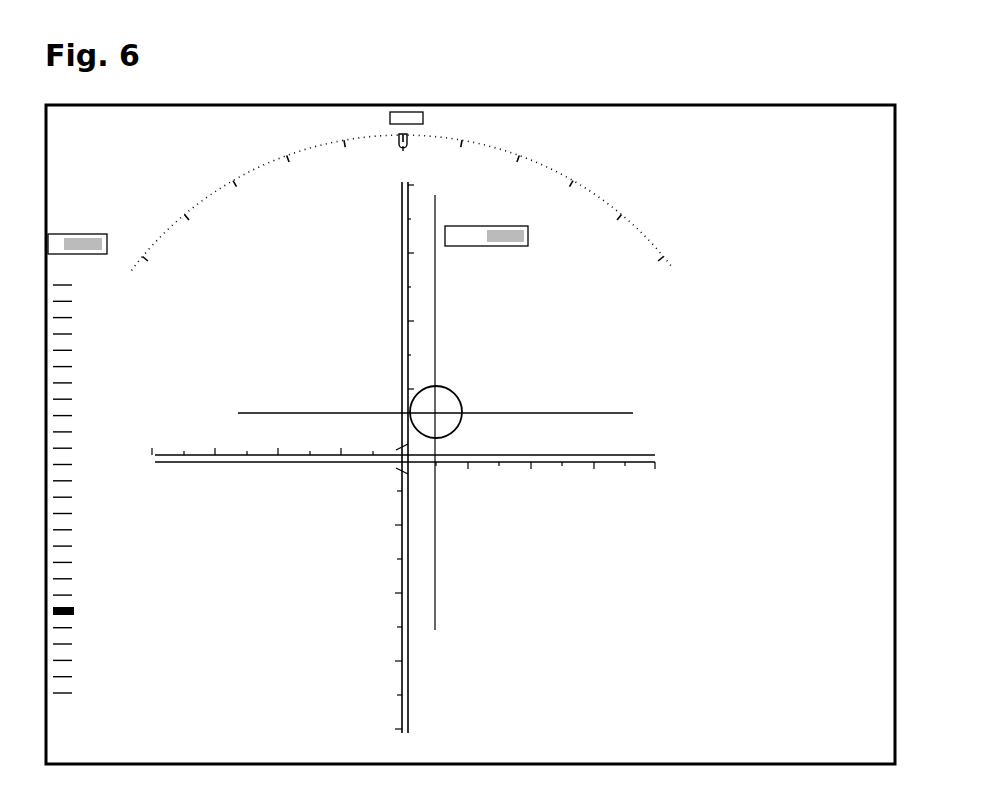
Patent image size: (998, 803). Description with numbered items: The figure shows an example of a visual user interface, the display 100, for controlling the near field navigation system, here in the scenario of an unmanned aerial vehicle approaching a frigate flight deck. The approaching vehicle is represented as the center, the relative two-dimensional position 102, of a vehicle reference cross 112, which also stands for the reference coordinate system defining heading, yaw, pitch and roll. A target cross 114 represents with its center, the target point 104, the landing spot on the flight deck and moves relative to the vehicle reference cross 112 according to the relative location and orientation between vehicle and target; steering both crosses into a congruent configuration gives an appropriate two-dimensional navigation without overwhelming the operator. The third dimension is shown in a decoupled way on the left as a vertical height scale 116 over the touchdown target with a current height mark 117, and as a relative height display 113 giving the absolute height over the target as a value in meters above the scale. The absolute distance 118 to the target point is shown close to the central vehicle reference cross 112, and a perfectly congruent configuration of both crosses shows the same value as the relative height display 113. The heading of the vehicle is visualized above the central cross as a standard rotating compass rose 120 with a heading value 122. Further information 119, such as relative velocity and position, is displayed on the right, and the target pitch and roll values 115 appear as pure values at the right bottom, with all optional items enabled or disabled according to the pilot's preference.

The display 100 is at (896, 345).
The relative two-dimensional position 102 is at (400, 458).
The target point 104 is at (456, 393).
The vehicle reference cross 112 is at (399, 300).
The relative height display 113 is at (86, 236).
The target cross 114 is at (565, 412).
The pitch and roll values 115 is at (758, 620).
The vertical height scale 116 is at (72, 395).
The current height mark 117 is at (76, 611).
The absolute distance 118 is at (520, 250).
The further information 119 is at (733, 222).
The rotating compass rose 120 is at (338, 150).
The heading value 122 is at (424, 118).